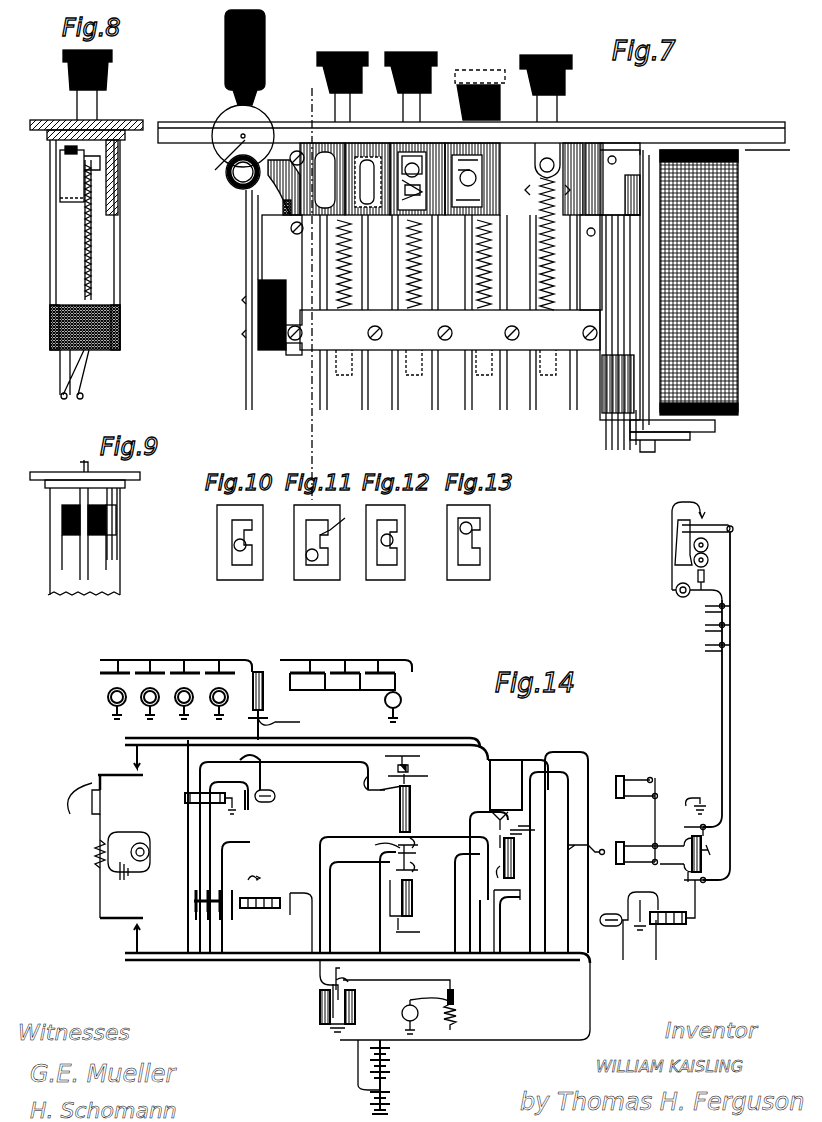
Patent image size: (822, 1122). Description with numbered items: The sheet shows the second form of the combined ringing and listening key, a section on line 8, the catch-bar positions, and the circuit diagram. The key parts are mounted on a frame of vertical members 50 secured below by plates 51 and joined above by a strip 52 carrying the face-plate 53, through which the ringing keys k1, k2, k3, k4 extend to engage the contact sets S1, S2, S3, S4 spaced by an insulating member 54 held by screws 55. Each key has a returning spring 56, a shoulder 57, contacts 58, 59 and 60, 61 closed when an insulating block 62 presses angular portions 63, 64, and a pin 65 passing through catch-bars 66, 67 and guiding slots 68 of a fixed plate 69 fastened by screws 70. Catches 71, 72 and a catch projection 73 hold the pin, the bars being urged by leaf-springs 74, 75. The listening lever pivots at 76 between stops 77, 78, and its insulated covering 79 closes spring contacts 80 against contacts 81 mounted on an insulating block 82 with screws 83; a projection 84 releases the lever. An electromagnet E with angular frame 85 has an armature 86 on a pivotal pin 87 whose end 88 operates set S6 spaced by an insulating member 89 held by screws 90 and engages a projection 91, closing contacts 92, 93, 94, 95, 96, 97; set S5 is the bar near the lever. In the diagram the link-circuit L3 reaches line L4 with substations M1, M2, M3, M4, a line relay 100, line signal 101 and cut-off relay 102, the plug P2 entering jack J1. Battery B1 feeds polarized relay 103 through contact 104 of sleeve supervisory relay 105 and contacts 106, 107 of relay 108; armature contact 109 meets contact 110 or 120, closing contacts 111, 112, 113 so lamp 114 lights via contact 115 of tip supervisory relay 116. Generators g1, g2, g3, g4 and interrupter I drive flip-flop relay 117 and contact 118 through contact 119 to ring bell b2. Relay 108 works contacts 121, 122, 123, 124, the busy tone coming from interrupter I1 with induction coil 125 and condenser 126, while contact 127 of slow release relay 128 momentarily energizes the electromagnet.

In FIG. 7, the vertical members 50 is at (295, 270).
In FIG. 9, the vertical members 50 is at (50, 495).
In FIG. 8, the plates 51 is at (128, 362).
In FIG. 7, the plates 51 is at (415, 352).
In FIG. 7, the strip 52 is at (595, 128).
In FIG. 7, the face-plate 53 is at (620, 143).
In FIG. 7, the insulating member 54 is at (378, 355).
In FIG. 7, the screws 55 is at (444, 330).
In FIG. 7, the returning spring 56 is at (380, 296).
In FIG. 7, the shoulder 57 is at (570, 150).
In FIG. 7, the contact 58 is at (524, 250).
In FIG. 14, the contact 58 is at (150, 673).
In FIG. 7, the contact 59 is at (525, 278).
In FIG. 14, the contact 59 is at (110, 668).
In FIG. 7, the contact 60 is at (570, 290).
In FIG. 14, the contact 60 is at (400, 680).
In FIG. 7, the contact 61 is at (565, 308).
In FIG. 14, the contact 61 is at (412, 662).
In FIG. 7, the insulating block 62 is at (519, 165).
In FIG. 7, the angular portion 63 is at (540, 191).
In FIG. 7, the angular portion 64 is at (592, 150).
In FIG. 7, the pin 65 is at (548, 160).
In FIG. 11, the pin 65 is at (308, 558).
In FIG. 12, the pin 65 is at (394, 542).
In FIG. 7, the catch-bar 66 is at (455, 218).
In FIG. 9, the catch-bar 66 is at (105, 545).
In FIG. 10, the catch-bar 66 is at (248, 580).
In FIG. 11, the catch-bar 66 is at (318, 580).
In FIG. 12, the catch-bar 66 is at (382, 580).
In FIG. 13, the catch-bar 66 is at (460, 580).
In FIG. 7, the catch-bar 67 is at (380, 218).
In FIG. 9, the catch-bar 67 is at (117, 500).
In FIG. 7, the guiding slots 68 is at (368, 207).
In FIG. 7, the fixed plate 69 is at (358, 143).
In FIG. 9, the fixed plate 69 is at (118, 575).
In FIG. 7, the screws 70 is at (297, 234).
In FIG. 7, the catch 71 is at (395, 162).
In FIG. 12, the catch 71 is at (377, 552).
In FIG. 7, the catch 72 is at (405, 190).
In FIG. 7, the catch projection 73 is at (465, 160).
In FIG. 11, the catch projection 73 is at (338, 519).
In FIG. 12, the catch projection 73 is at (393, 540).
In FIG. 7, the leaf-spring 74 is at (283, 208).
In FIG. 7, the leaf-spring 75 is at (633, 184).
In FIG. 7, the pivot 76 is at (217, 157).
In FIG. 7, the shoulder stop 77 is at (215, 140).
In FIG. 7, the shoulder stop 78 is at (286, 157).
In FIG. 7, the insulated covering 79 is at (228, 178).
In FIG. 7, the spring contacts 80 is at (246, 230).
In FIG. 9, the spring contacts 80 is at (60, 553).
In FIG. 14, the spring contacts 80 is at (138, 780).
In FIG. 7, the contacts 81 is at (272, 232).
In FIG. 9, the contacts 81 is at (80, 570).
In FIG. 14, the contacts 81 is at (142, 762).
In FIG. 7, the insulating block 82 is at (276, 350).
In FIG. 7, the screws 83 is at (242, 300).
In FIG. 7, the projection 84 is at (281, 187).
In FIG. 7, the angular frame 85 is at (740, 152).
In FIG. 7, the armature 86 is at (700, 432).
In FIG. 7, the pivotal pin 87 is at (650, 452).
In FIG. 7, the upwardly projecting end 88 is at (640, 152).
In FIG. 7, the insulating member 89 is at (602, 385).
In FIG. 7, the screws 90 is at (604, 415).
In FIG. 7, the projection 91 is at (620, 179).
In FIG. 7, the contact 92 is at (636, 448).
In FIG. 14, the contact 92 is at (533, 791).
In FIG. 7, the contact 93 is at (630, 450).
In FIG. 14, the contact 93 is at (506, 795).
In FIG. 7, the contact 94 is at (624, 450).
In FIG. 14, the contact 94 is at (526, 816).
In FIG. 7, the contact 95 is at (618, 450).
In FIG. 14, the contact 95 is at (515, 837).
In FIG. 7, the contact 96 is at (612, 450).
In FIG. 14, the contact 96 is at (507, 921).
In FIG. 7, the contact 97 is at (606, 448).
In FIG. 14, the contact 97 is at (496, 868).
In FIG. 14, the line relay 100 is at (672, 924).
In FIG. 14, the line signal 101 is at (606, 914).
In FIG. 14, the cut-off relay 102 is at (702, 852).
In FIG. 14, the polarized relay 103 is at (320, 1005).
In FIG. 14, the normal contact 104 is at (299, 923).
In FIG. 14, the sleeve supervisory relay 105 is at (262, 908).
In FIG. 14, the contact 106 is at (366, 780).
In FIG. 14, the contact 107 is at (383, 794).
In FIG. 14, the relay 108 is at (410, 805).
In FIG. 14, the armature contact 109 is at (340, 975).
In FIG. 14, the contact 110 is at (320, 978).
In FIG. 14, the contact 111 is at (206, 915).
In FIG. 14, the contact 112 is at (222, 915).
In FIG. 14, the contact 113 is at (240, 905).
In FIG. 14, the supervisory lamp 114 is at (268, 790).
In FIG. 14, the normal contact 115 is at (245, 788).
In FIG. 14, the tip supervisory relay 116 is at (205, 790).
In FIG. 14, the flip-flop relay 117 is at (272, 706).
In FIG. 14, the contact 118 is at (286, 717).
In FIG. 14, the contact 119 is at (410, 745).
In FIG. 14, the contact 120 is at (396, 980).
In FIG. 14, the contact 121 is at (420, 780).
In FIG. 14, the contact 122 is at (418, 846).
In FIG. 14, the contact 123 is at (371, 845).
In FIG. 14, the contact 124 is at (414, 875).
In FIG. 14, the induction coil 125 is at (416, 1028).
In FIG. 14, the condenser 126 is at (453, 996).
In FIG. 14, the contact 127 is at (396, 935).
In FIG. 14, the slow release relay 128 is at (412, 898).
In FIG. 7, the section line 8 is at (296, 95).
In FIG. 7, the electromagnet E is at (740, 215).
In FIG. 14, the electromagnet E is at (514, 858).
In FIG. 7, the ringing key k1 is at (340, 50).
In FIG. 14, the ringing key k1 is at (112, 650).
In FIG. 7, the ringing key k2 is at (262, 32).
In FIG. 7, the ringing key k3 is at (478, 82).
In FIG. 7, the ringing key k4 is at (555, 55).
In FIG. 7, the contact set S1 is at (339, 377).
In FIG. 14, the contact set S1 is at (113, 686).
In FIG. 7, the contact set S2 is at (406, 392).
In FIG. 14, the contact set S2 is at (148, 686).
In FIG. 7, the contact set S3 is at (476, 387).
In FIG. 14, the contact set S3 is at (182, 686).
In FIG. 7, the contact set S4 is at (545, 387).
In FIG. 14, the contact set S4 is at (216, 686).
In FIG. 7, the switch S5 is at (246, 372).
In FIG. 7, the contact set S6 is at (604, 425).
In FIG. 14, the generator g1 is at (110, 706).
In FIG. 14, the generator g2 is at (143, 706).
In FIG. 14, the generator g3 is at (177, 706).
In FIG. 14, the generator g4 is at (213, 706).
In FIG. 14, the interrupter I is at (388, 708).
In FIG. 14, the interrupter I1 is at (402, 1010).
In FIG. 14, the link-circuit L3 is at (410, 738).
In FIG. 14, the telephone line L4 is at (732, 712).
In FIG. 14, the substation M1 is at (688, 551).
In FIG. 14, the substation M2 is at (706, 605).
In FIG. 14, the substation M3 is at (706, 625).
In FIG. 14, the substation M4 is at (706, 645).
In FIG. 14, the call-bell b2 is at (708, 560).
In FIG. 14, the jack J1 is at (618, 772).
In FIG. 14, the calling plug P2 is at (586, 839).
In FIG. 14, the battery B1 is at (387, 1077).